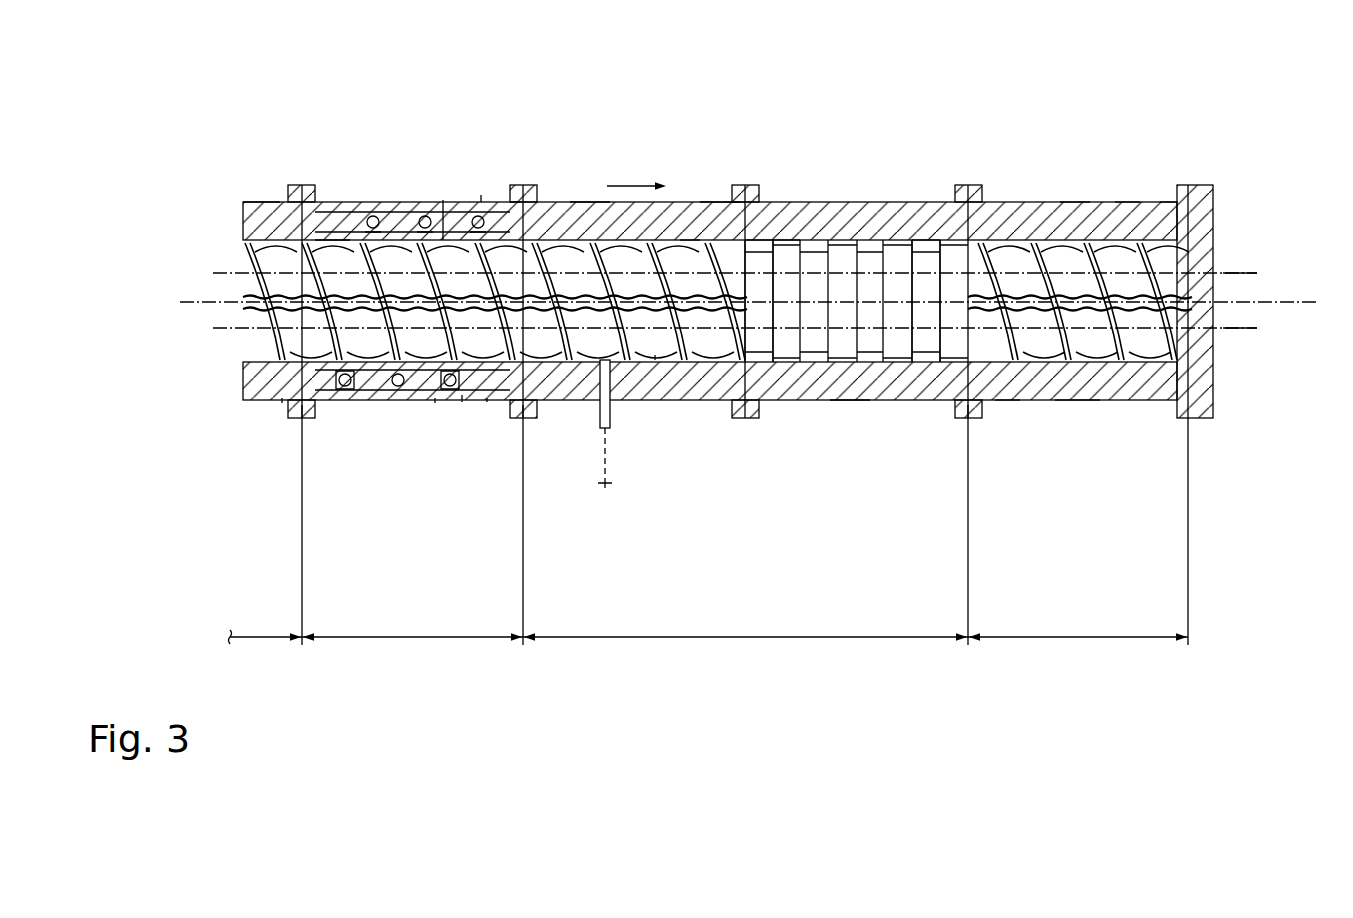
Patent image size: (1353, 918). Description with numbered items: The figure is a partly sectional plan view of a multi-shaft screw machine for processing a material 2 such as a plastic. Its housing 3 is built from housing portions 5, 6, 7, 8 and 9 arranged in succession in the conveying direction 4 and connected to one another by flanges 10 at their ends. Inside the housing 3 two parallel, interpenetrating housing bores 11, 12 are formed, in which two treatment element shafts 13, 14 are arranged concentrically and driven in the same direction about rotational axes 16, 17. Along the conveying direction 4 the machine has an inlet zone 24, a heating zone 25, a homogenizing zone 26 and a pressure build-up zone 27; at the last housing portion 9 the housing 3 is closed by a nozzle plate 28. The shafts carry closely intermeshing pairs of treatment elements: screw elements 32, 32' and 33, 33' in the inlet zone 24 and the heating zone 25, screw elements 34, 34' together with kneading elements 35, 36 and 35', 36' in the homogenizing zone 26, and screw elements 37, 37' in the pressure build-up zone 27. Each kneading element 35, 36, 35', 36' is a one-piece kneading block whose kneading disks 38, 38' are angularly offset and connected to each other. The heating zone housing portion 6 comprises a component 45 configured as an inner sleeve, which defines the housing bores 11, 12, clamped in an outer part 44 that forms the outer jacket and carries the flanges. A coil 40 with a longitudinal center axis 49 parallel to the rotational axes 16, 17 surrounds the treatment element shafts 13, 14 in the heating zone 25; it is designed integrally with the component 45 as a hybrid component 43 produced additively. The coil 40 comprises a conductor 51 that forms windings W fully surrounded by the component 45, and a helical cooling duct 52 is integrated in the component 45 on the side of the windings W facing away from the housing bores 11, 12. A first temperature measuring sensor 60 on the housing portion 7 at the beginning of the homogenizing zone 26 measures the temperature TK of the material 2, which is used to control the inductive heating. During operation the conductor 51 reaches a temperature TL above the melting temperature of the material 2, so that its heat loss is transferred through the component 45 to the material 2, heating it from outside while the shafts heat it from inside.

The material to be processed 2 is at (238, 372).
The housing 3 is at (726, 183).
The conveying direction 4 is at (637, 184).
The housing portion 5 is at (262, 200).
The heating zone housing portion 6 is at (515, 185).
The housing portion 7 is at (590, 200).
The housing portion 8 is at (850, 400).
The last housing portion 9 is at (1090, 403).
The flange 10 is at (298, 185).
The housing bore 11 is at (1008, 403).
The housing bore 12 is at (1075, 202).
The treatment element shaft 13 is at (1067, 403).
The treatment element shaft 14 is at (1128, 202).
The rotational axis 16 is at (1240, 330).
The rotational axis 17 is at (1225, 270).
The inlet zone 24 is at (266, 525).
The heating zone 25 is at (412, 525).
The homogenizing zone 26 is at (745, 525).
The pressure build-up zone 27 is at (1078, 531).
The nozzle plate 28 is at (1210, 185).
The screw element 32 is at (671, 325).
The screw element 32' is at (670, 254).
The screw element 33 is at (495, 378).
The screw element 33' is at (343, 153).
The screw element 34 is at (717, 424).
The screw element 34' is at (702, 153).
The kneading element 35 is at (856, 396).
The kneading element 35' is at (857, 161).
The kneading element 36 is at (911, 396).
The kneading element 36' is at (955, 163).
The screw element 37 is at (1083, 378).
The screw element 37' is at (1195, 134).
The kneading disk 38 is at (771, 377).
The kneading disk 38' is at (813, 162).
The coil 40 is at (462, 402).
The hybrid component 43 is at (443, 200).
The outer part 44 is at (385, 200).
The component 45 is at (481, 190).
The longitudinal center axis 49 is at (207, 302).
The conductor 51 is at (415, 200).
The cooling duct 52 is at (346, 402).
The first temperature measuring sensor 60 is at (612, 428).
The winding W is at (282, 403).
The conductor temperature TL is at (487, 402).
The material temperature TK is at (655, 358).